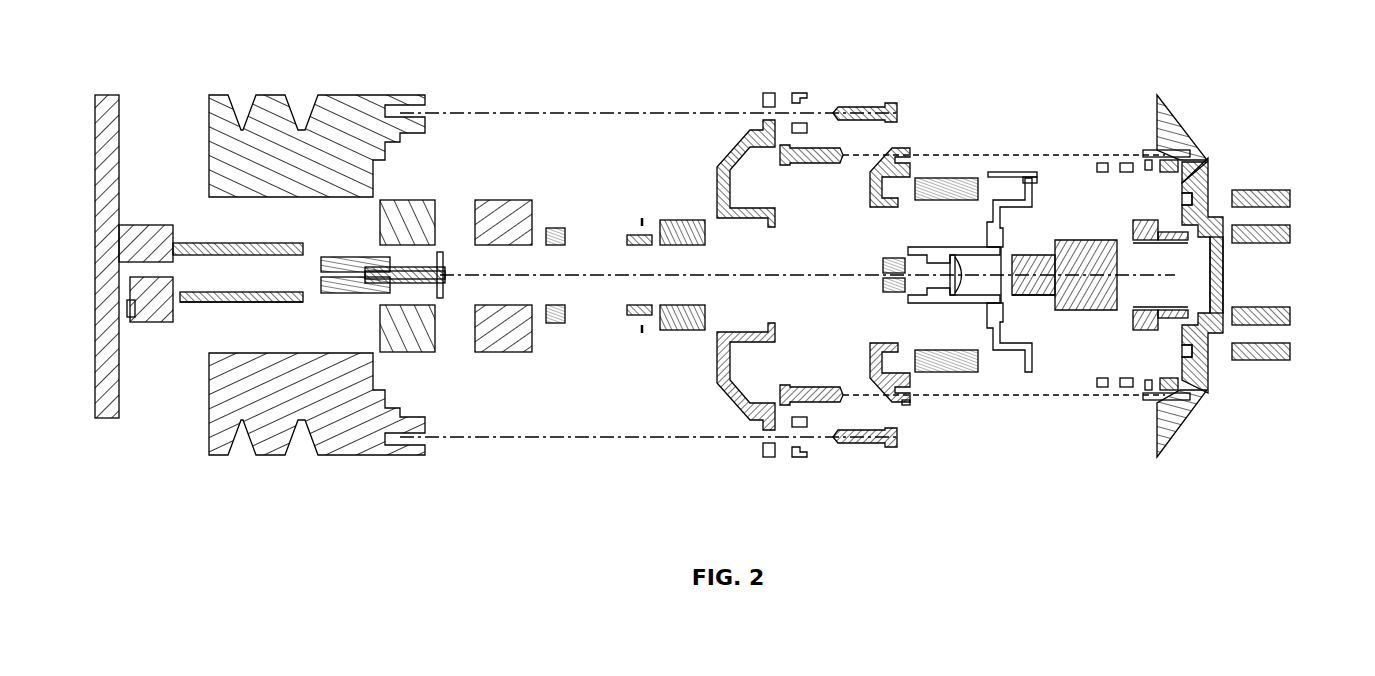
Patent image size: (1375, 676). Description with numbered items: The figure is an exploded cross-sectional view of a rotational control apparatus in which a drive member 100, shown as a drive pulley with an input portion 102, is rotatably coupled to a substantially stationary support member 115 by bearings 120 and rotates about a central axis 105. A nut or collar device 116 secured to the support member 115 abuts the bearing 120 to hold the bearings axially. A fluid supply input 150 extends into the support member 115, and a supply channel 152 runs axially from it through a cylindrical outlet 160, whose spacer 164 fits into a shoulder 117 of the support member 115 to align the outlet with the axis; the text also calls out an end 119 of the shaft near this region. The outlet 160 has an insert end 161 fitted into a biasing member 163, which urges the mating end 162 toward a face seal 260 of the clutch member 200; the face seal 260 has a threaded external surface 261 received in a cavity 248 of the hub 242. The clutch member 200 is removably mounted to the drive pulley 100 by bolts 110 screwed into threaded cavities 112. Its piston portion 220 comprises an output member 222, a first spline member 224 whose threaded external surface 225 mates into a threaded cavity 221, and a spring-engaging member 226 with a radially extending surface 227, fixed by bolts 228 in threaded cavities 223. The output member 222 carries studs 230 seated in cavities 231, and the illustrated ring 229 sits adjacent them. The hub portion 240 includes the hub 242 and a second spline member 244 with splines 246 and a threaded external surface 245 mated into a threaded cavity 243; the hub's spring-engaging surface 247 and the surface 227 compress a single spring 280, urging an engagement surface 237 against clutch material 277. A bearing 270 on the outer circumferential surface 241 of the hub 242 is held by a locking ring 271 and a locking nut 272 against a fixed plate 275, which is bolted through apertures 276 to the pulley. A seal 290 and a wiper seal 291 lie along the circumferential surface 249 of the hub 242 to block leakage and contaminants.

The drive member 100 is at (551, 241).
The input portion 102 is at (296, 93).
The central axis 105 is at (640, 275).
The bolts 110 is at (870, 105).
The threaded cavities 112 is at (427, 110).
The support member 115 is at (93, 131).
The collar device 116 is at (553, 229).
The shoulder 117 is at (303, 293).
The shaft end 119 is at (192, 300).
The bearings 120 is at (492, 204).
The fluid supply input 150 is at (135, 322).
The supply channel 152 is at (303, 248).
The cylindrical outlet 160 is at (401, 289).
The insert end 161 is at (372, 257).
The mating end 162 is at (444, 285).
The biasing member 163 is at (355, 293).
The spacer 164 is at (444, 258).
The clutch member 200 is at (986, 250).
The piston portion 220 is at (1125, 284).
The threaded cavity 221 is at (1224, 275).
The output member 222 is at (1214, 157).
The threaded cavities 223 is at (1172, 148).
The first spline member 224 is at (1196, 166).
The external surface 225 is at (1163, 331).
The spring-engaging member 226 is at (870, 345).
The radially extending surface 227 is at (878, 414).
The bolts 228 is at (795, 164).
The upper ring 229 is at (1160, 244).
The studs 230 is at (1290, 198).
The cavities 231 is at (1195, 200).
The engagement surface 237 is at (1158, 100).
The hub portion 240 is at (1074, 212).
The outer circumferential surface 241 is at (965, 307).
The hub 242 is at (993, 169).
The threaded cavity 243 is at (975, 245).
The second spline member 244 is at (1040, 253).
The external surface 245 is at (1030, 300).
The splines 246 is at (1110, 242).
The spring-engaging surface 247 is at (1027, 175).
The cavity 248 is at (910, 247).
The circumferential surface 249 is at (1000, 380).
The face seal 260 is at (883, 263).
The external surface 261 is at (890, 292).
The bearing 270 is at (672, 332).
The locking ring 271 is at (642, 216).
The locking nut 272 is at (642, 320).
The fixed plate 275 is at (745, 142).
The apertures 276 is at (762, 102).
The clutch material 277 is at (800, 92).
The spring 280 is at (945, 175).
The seal 290 is at (1128, 162).
The wiper seal 291 is at (1102, 162).